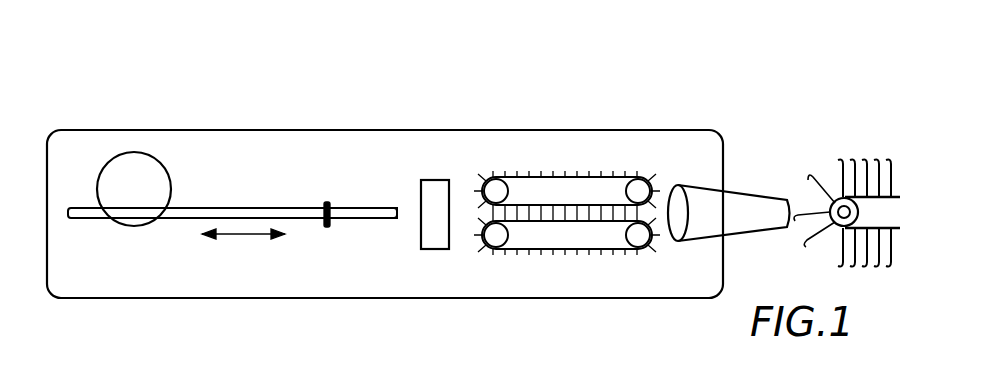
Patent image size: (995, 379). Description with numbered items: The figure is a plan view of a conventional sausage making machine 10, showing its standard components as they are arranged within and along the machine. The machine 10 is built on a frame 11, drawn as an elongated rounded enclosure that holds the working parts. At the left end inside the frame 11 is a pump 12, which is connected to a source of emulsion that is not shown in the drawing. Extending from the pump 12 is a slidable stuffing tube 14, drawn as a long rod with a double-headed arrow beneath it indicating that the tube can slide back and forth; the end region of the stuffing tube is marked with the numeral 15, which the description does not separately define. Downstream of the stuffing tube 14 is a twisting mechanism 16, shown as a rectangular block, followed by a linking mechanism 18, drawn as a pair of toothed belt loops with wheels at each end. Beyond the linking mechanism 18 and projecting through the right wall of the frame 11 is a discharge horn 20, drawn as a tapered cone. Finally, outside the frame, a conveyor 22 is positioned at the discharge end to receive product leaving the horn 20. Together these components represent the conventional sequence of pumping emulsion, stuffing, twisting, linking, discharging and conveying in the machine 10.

The sausage making machine 10 is at (213, 108).
The frame 11 is at (190, 142).
The pump 12 is at (138, 215).
The slidable stuffing tube 14 is at (246, 210).
The rod end 15 is at (390, 205).
The twisting mechanism 16 is at (435, 190).
The linking mechanism 18 is at (525, 180).
The discharge horn 20 is at (738, 205).
The conveyor 22 is at (838, 200).